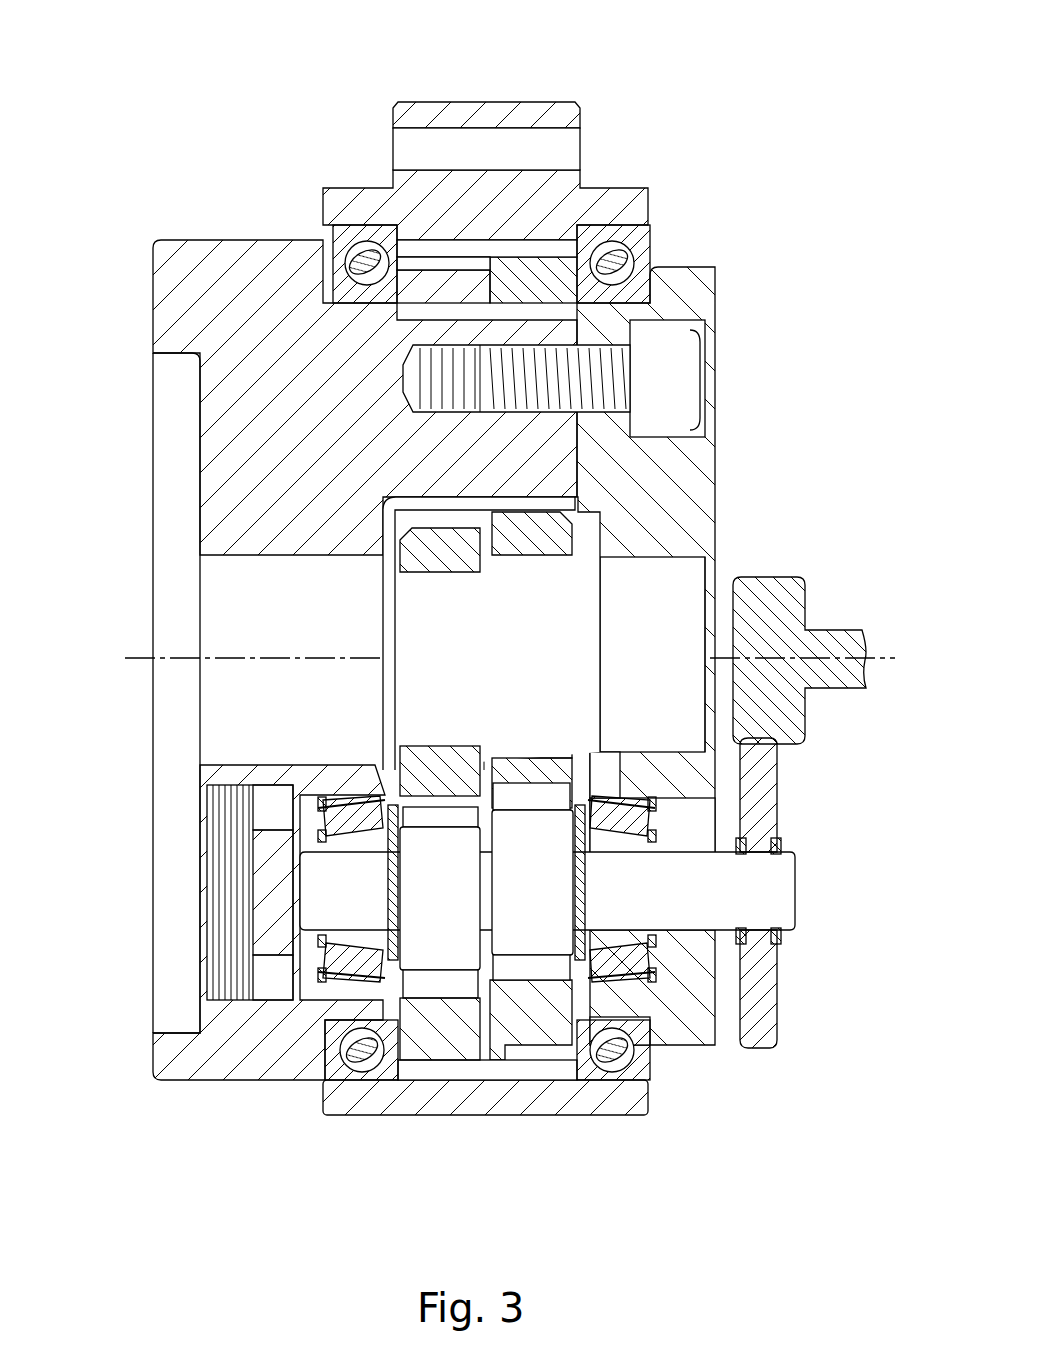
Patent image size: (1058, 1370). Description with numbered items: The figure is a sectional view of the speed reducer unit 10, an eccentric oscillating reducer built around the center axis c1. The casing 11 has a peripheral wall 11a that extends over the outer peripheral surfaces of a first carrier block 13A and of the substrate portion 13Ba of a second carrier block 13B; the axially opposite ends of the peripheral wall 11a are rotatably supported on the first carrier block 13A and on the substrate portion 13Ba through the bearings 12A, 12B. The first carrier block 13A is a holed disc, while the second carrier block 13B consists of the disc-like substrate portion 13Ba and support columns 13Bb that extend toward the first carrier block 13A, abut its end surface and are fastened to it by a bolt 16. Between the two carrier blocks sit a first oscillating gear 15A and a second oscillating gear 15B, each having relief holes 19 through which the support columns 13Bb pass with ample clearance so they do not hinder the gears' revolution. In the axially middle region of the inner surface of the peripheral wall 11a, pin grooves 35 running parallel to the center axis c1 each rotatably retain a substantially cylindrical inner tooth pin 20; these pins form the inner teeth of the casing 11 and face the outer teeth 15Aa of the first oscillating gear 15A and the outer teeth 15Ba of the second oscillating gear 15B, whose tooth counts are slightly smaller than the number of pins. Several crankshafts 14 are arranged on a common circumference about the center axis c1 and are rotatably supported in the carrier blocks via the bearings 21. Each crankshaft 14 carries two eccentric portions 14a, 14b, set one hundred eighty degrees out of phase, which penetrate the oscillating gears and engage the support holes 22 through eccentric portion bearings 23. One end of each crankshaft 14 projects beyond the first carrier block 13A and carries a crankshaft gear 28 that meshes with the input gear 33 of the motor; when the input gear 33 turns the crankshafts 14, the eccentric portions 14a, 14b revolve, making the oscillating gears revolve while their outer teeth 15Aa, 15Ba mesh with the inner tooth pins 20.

The speed reducer unit 10 is at (652, 117).
The casing 11 is at (360, 195).
The peripheral wall 11a is at (415, 103).
The bearing 12A is at (625, 245).
The bearing 12B is at (352, 245).
The first carrier block 13A is at (695, 492).
The second carrier block 13B is at (188, 320).
The substrate portion 13Ba is at (222, 448).
The support column 13Bb is at (510, 470).
The crankshaft 14 is at (683, 905).
The eccentric portion 14a is at (520, 1050).
The eccentric portion 14b is at (430, 1010).
The first oscillating gear 15A is at (588, 1075).
The outer teeth 15Aa is at (505, 1047).
The second oscillating gear 15B is at (365, 1082).
The outer teeth 15Ba is at (440, 258).
The bolt 16 is at (700, 378).
The relief hole 19 is at (445, 530).
The inner tooth pin 20 is at (505, 245).
The bearing 21 is at (335, 792).
The support hole 22 is at (332, 800).
The eccentric portion bearing 23 is at (450, 775).
The crankshaft gear 28 is at (760, 780).
The input gear 33 is at (790, 580).
The pin groove 35 is at (462, 250).
The center axis c1 is at (222, 657).